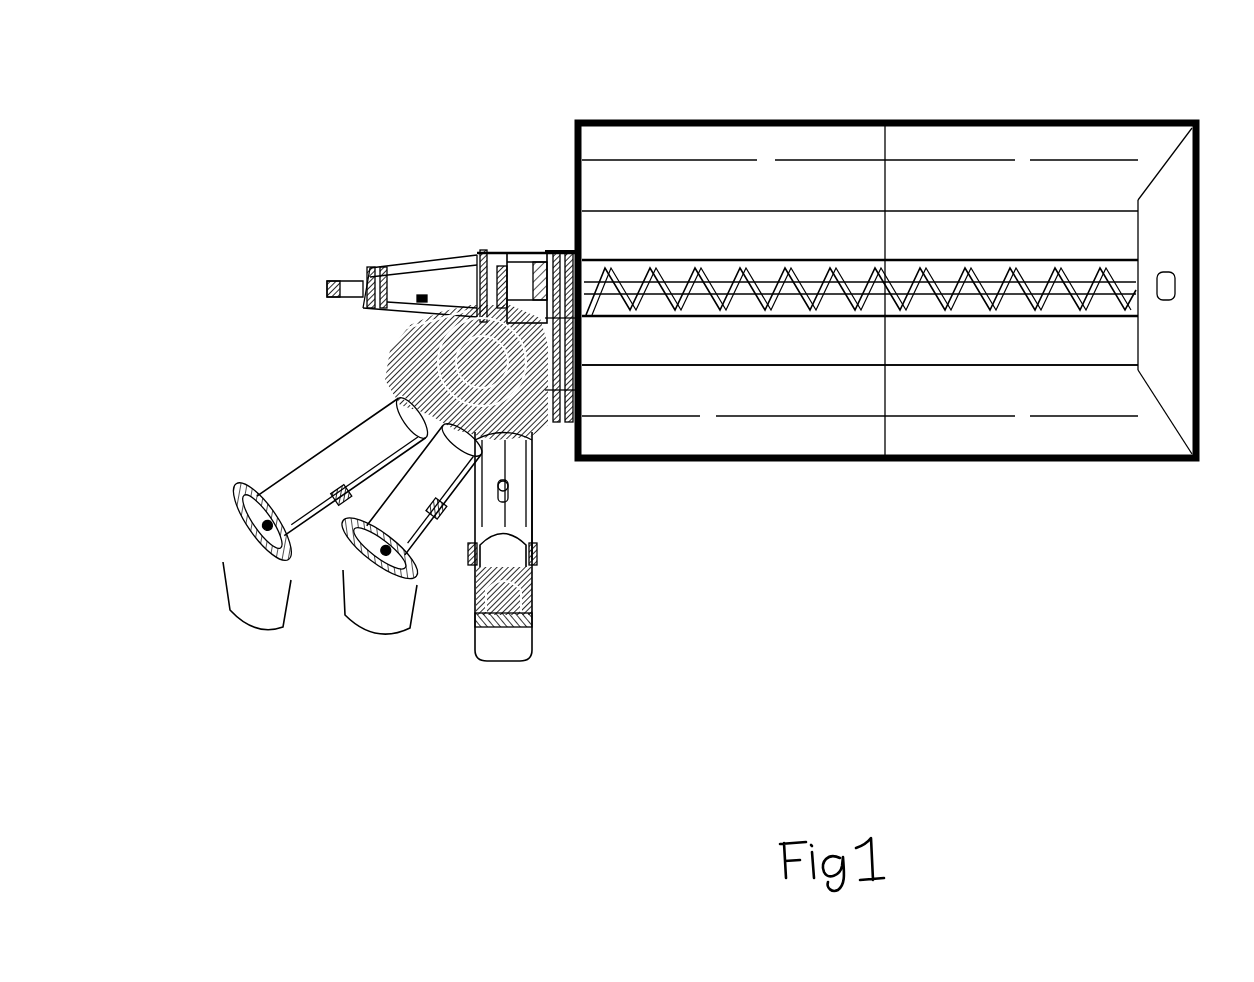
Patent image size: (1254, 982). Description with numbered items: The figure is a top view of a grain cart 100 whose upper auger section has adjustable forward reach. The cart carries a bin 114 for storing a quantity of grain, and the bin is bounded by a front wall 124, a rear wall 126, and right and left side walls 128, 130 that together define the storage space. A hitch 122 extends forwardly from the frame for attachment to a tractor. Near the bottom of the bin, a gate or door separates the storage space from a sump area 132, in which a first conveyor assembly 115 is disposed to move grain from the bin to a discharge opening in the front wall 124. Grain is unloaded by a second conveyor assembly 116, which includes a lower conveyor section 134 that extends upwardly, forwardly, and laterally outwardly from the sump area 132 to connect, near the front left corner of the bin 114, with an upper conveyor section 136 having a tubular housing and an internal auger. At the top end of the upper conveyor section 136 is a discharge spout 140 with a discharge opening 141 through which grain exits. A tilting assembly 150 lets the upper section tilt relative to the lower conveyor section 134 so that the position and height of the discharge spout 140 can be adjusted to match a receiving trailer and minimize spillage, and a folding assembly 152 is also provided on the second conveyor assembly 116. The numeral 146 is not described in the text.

The grain cart 100 is at (530, 122).
The bin 114 is at (1195, 462).
The first conveyor assembly 115 is at (745, 330).
The second conveyor assembly 116 is at (578, 510).
The hitch 122 is at (352, 282).
The front wall 124 is at (572, 153).
The rear wall 126 is at (1170, 236).
The right side wall 128 is at (948, 132).
The left side wall 130 is at (996, 450).
The sump area 132 is at (866, 264).
The lower conveyor section 134 is at (542, 300).
The upper conveyor section 136 is at (534, 510).
The discharge spout 140 is at (533, 642).
The discharge opening 141 is at (255, 610).
The arm outlet 146 is at (286, 600).
The tilting assembly 150 is at (488, 318).
The folding assembly 152 is at (540, 437).